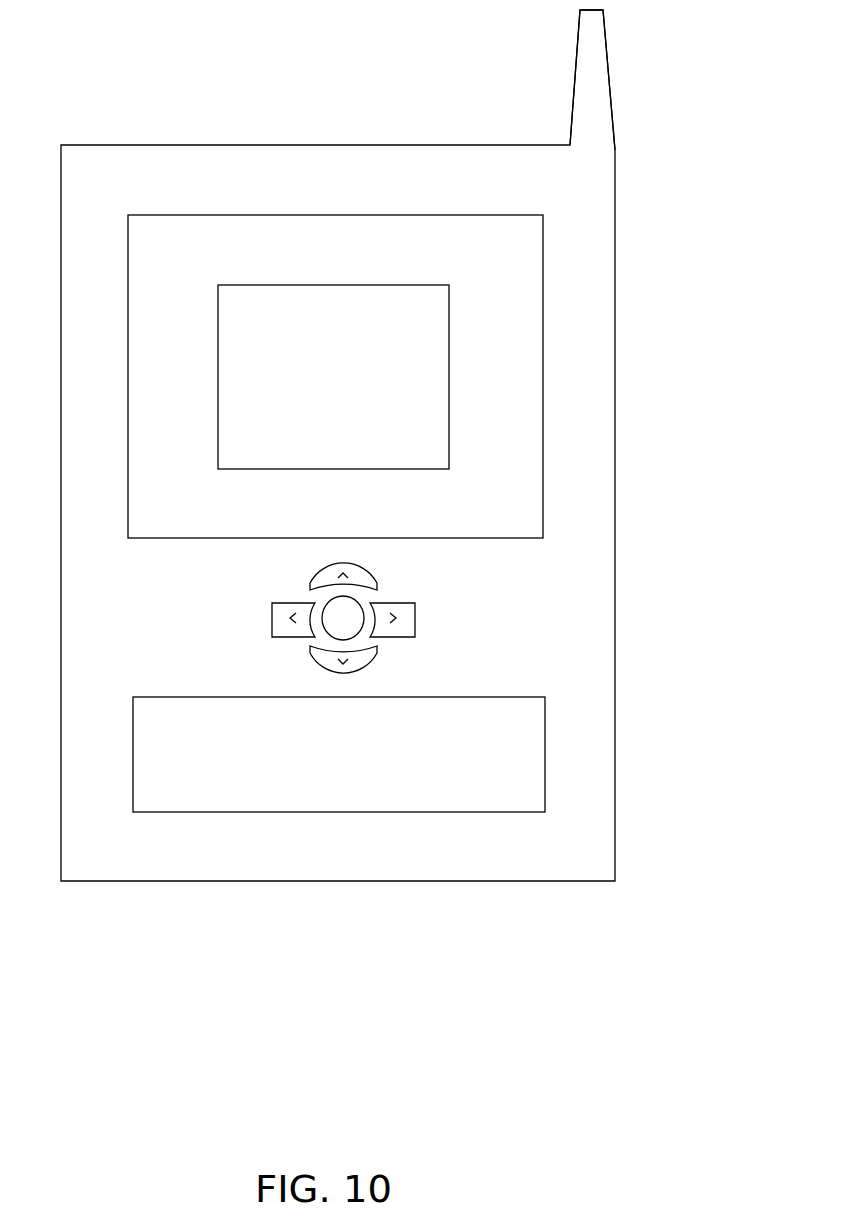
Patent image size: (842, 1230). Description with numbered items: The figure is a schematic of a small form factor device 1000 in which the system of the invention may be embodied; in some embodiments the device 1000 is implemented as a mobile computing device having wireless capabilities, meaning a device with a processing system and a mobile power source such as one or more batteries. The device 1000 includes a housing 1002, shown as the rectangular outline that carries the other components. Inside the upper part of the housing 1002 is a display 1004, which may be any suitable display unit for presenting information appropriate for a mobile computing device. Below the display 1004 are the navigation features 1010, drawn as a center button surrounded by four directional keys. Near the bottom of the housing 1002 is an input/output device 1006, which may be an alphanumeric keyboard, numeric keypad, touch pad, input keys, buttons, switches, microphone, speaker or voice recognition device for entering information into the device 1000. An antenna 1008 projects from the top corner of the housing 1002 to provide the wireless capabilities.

The small form factor device 1000 is at (346, 1157).
The housing 1002 is at (615, 497).
The display 1004 is at (483, 214).
The input/output (I/O) device 1006 is at (545, 725).
The antenna 1008 is at (576, 58).
The navigation features 1010 is at (435, 603).